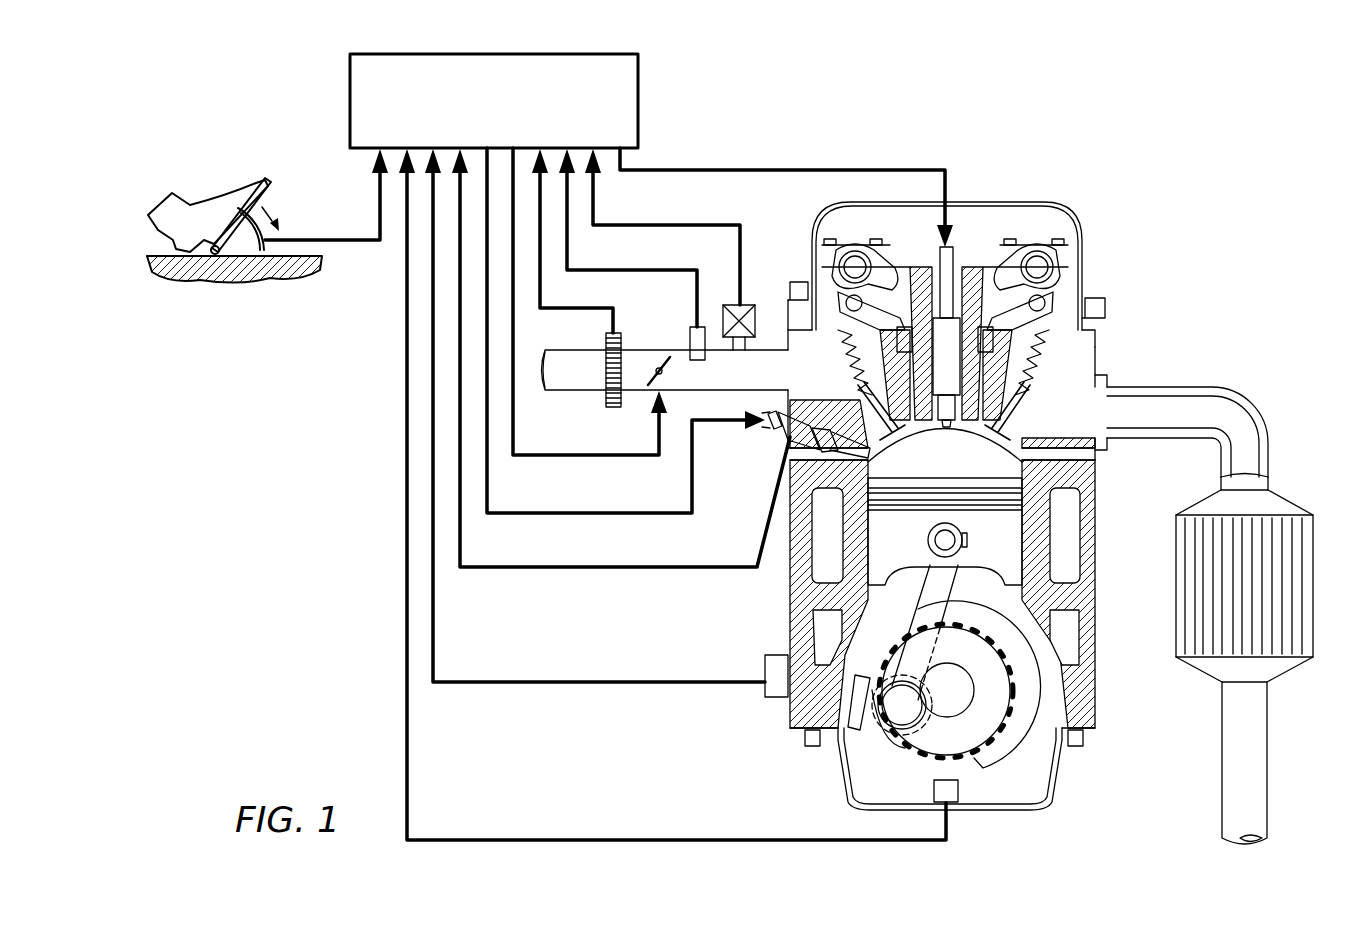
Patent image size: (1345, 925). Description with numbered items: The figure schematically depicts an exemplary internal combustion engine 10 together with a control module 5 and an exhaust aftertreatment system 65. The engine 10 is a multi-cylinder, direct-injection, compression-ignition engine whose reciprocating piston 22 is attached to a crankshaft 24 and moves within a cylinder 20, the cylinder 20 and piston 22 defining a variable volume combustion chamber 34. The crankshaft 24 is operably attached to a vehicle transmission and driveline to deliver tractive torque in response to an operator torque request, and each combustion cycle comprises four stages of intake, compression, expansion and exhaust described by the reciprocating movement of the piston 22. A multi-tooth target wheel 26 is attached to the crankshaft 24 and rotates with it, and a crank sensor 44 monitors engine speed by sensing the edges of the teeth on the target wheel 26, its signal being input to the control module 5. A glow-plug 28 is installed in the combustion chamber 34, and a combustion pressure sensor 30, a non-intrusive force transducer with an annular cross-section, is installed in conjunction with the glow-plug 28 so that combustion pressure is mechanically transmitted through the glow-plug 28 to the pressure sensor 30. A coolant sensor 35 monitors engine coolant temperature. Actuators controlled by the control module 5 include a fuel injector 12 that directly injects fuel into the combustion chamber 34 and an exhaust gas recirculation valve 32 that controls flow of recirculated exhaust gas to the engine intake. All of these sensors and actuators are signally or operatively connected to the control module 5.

The control module 5 is at (615, 63).
The internal combustion engine 10 is at (887, 489).
The fuel injector 12 is at (948, 262).
The cylinder 20 is at (1095, 455).
The piston 22 is at (915, 550).
The crankshaft 24 is at (1025, 695).
The multi-tooth target wheel 26 is at (990, 710).
The glow-plug 28 is at (720, 422).
The combustion pressure sensor 30 is at (727, 569).
The exhaust gas recirculation valve 32 is at (748, 305).
The combustion chamber 34 is at (957, 470).
The coolant sensor 35 is at (727, 684).
The crank sensor 44 is at (950, 790).
The exhaust aftertreatment system 65 is at (1287, 510).